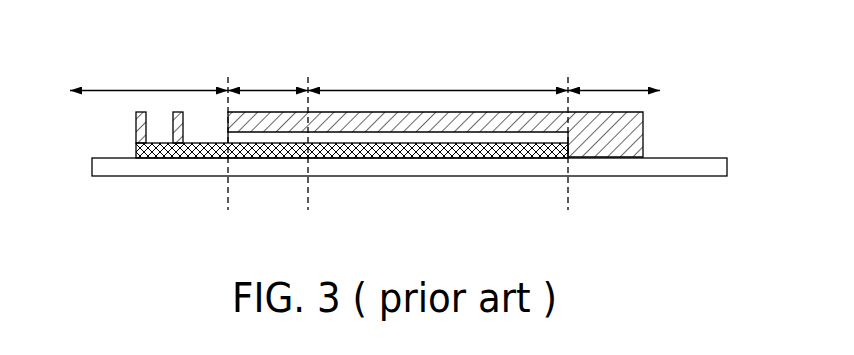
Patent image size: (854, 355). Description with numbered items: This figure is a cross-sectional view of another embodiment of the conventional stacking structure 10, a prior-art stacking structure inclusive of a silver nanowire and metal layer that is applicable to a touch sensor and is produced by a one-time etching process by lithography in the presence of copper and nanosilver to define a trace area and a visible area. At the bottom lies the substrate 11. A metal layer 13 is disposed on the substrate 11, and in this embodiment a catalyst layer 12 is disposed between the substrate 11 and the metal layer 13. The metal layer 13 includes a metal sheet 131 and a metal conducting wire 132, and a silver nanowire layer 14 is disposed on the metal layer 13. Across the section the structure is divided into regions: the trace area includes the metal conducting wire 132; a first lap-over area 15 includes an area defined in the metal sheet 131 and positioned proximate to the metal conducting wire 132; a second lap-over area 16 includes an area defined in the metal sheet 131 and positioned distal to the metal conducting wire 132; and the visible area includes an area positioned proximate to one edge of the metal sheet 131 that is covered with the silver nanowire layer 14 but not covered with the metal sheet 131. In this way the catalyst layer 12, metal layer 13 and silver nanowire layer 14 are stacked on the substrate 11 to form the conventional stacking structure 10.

The stacking structure 10 is at (63, 41).
The substrate 11 is at (698, 166).
The catalyst layer 12 is at (507, 157).
The metal layer 13 is at (553, 138).
The silver nanowire layer 14 is at (643, 112).
The first lap-over area 15 is at (268, 73).
The second lap-over area 16 is at (438, 73).
The metal sheet 131 is at (401, 137).
The metal conducting wire 132 is at (167, 158).